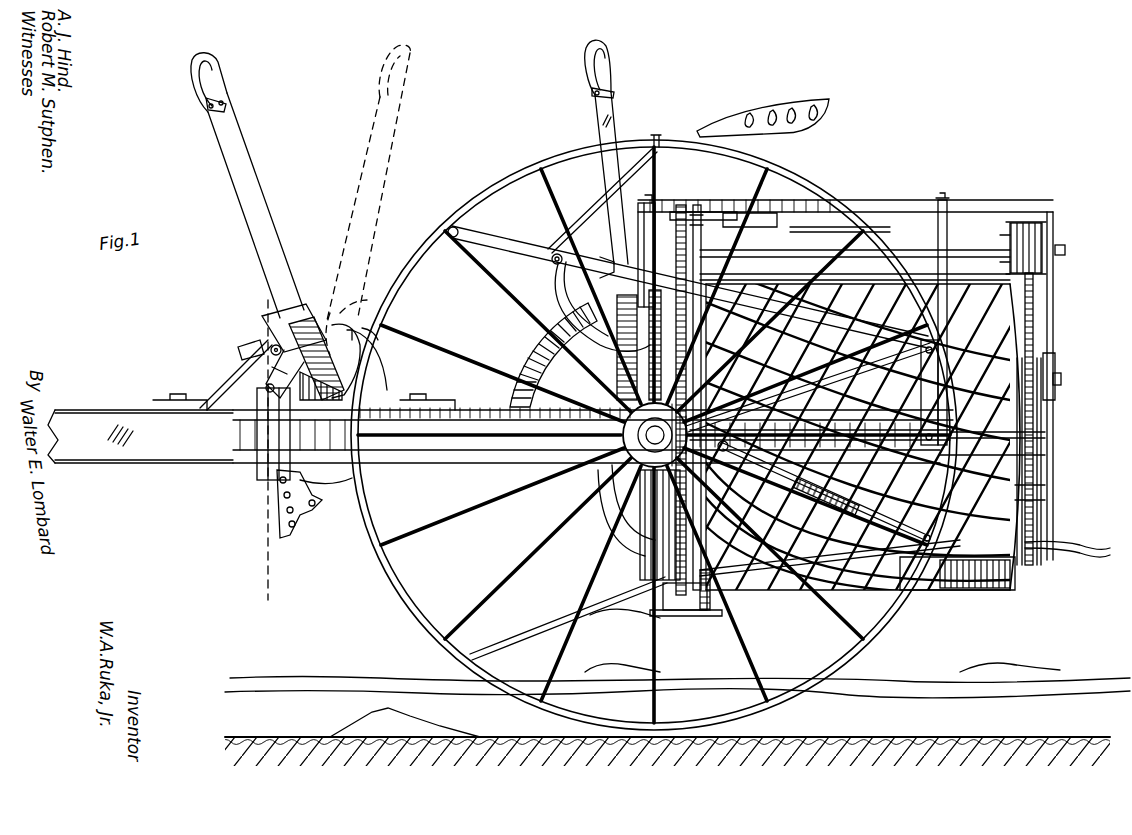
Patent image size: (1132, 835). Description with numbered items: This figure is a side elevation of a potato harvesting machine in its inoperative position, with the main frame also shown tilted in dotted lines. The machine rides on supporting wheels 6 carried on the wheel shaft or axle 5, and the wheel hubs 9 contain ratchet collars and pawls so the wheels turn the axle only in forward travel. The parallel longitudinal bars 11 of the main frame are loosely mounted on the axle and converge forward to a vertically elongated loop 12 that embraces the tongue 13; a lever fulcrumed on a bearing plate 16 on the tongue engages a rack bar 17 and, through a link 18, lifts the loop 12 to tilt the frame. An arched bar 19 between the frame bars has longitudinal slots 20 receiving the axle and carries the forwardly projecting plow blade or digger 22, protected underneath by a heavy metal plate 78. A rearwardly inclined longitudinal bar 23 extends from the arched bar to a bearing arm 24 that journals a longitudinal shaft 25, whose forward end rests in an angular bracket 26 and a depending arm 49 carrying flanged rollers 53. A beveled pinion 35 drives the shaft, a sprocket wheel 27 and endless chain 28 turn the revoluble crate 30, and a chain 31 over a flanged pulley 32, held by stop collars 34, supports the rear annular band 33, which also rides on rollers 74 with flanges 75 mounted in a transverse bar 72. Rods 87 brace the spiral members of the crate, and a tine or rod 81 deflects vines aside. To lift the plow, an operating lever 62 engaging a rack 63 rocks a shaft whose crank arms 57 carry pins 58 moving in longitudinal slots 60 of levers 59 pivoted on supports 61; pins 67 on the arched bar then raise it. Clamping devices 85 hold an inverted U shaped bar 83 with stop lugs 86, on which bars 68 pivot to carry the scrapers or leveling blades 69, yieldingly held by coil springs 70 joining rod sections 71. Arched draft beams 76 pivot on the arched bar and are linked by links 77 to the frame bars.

The wheel shaft or axle 5 is at (583, 492).
The supporting wheels 6 is at (412, 582).
The wheel hubs 9 is at (540, 470).
The longitudinal bars 11 is at (1045, 443).
The loop 12 is at (262, 478).
The tongue 13 is at (165, 455).
The bearing plate 16 is at (345, 405).
The rack bar 17 is at (368, 221).
The link 18 is at (262, 372).
The arched bar 19 is at (640, 225).
The longitudinal slots 20 is at (618, 350).
The plow blade or digger 22 is at (585, 600).
The longitudinal bar 23 is at (960, 212).
The bearing arm 24 is at (1053, 292).
The longitudinal shaft 25 is at (908, 248).
The angular bracket 26 is at (740, 248).
The sprocket wheel 27 is at (698, 240).
The endless chain 28 is at (686, 590).
The revoluble crate 30 is at (1045, 494).
The chain 31 is at (1032, 300).
The flanged pulley 32 is at (1045, 240).
The annular band 33 is at (1126, 392).
The stop collars 34 is at (1010, 262).
The beveled pinion 35 is at (665, 205).
The depending arm 49 is at (703, 208).
The rollers 53 is at (688, 287).
The crank arms 57 is at (592, 375).
The pins 58 is at (560, 266).
The levers 59 is at (825, 330).
The longitudinal slots 60 is at (490, 240).
The supports 61 is at (945, 340).
The operating lever 62 is at (606, 178).
The rack 63 is at (540, 348).
The pins 67 is at (630, 247).
The bars 68 is at (960, 480).
The scrapers or leveling blades 69 is at (1015, 588).
The coil springs 70 is at (862, 415).
The rod sections 71 is at (816, 392).
The transverse bar 72 is at (1056, 398).
The rollers 74 is at (1050, 405).
The flanges 75 is at (360, 238).
The arched draft beams 76 is at (430, 478).
The links 77 is at (300, 486).
The metal plate 78 is at (690, 616).
The rod or tine 81 is at (1070, 542).
The inverted U shaped bar 83 is at (935, 220).
The clamping devices 85 is at (1050, 438).
The stop lugs 86 is at (1040, 500).
The rods 87 is at (790, 590).